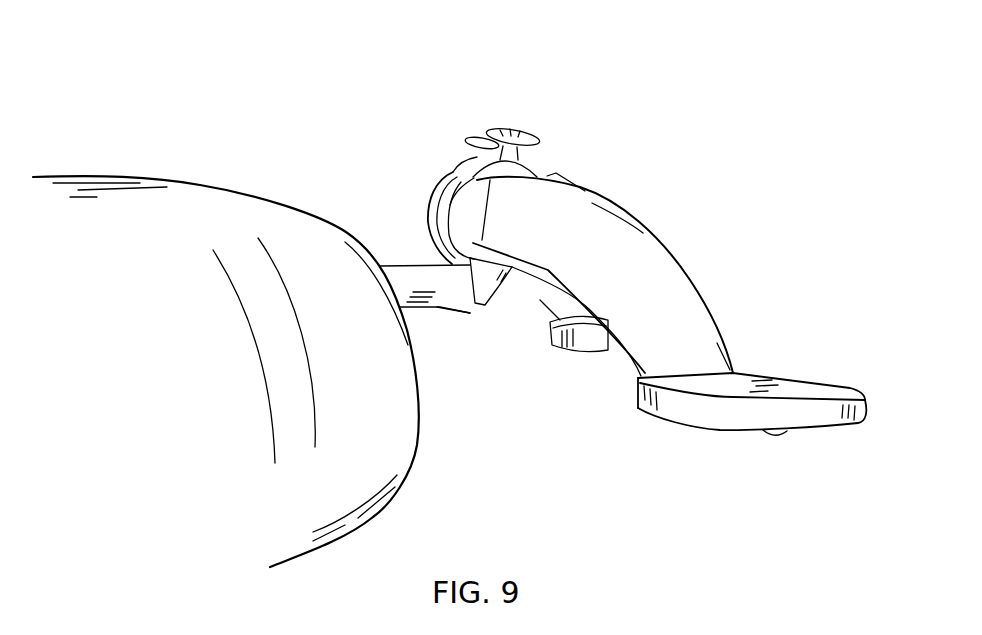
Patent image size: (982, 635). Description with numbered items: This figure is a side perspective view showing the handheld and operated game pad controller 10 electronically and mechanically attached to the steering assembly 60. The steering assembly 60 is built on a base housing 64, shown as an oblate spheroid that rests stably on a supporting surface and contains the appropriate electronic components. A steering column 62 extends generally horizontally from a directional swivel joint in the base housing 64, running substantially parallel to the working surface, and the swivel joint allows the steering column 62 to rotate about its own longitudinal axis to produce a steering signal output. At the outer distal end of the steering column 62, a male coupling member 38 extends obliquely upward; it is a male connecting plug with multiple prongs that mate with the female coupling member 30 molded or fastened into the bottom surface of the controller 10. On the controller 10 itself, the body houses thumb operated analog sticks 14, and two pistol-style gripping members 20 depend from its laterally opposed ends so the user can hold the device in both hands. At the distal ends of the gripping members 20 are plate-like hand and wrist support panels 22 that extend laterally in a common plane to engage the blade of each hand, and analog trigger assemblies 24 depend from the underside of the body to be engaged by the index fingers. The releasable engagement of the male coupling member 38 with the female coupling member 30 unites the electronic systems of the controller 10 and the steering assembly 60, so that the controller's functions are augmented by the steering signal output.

The game pad controller 10 is at (652, 188).
The thumb operated analog stick 14 is at (533, 130).
The gripping member 20 is at (688, 302).
The hand and wrist support panel 22 is at (817, 387).
The analog trigger assembly 24 is at (512, 267).
The female coupling member 30 is at (452, 262).
The male coupling member 38 is at (463, 268).
The steering assembly 60 is at (267, 156).
The steering column 62 is at (397, 267).
The base housing 64 is at (133, 220).